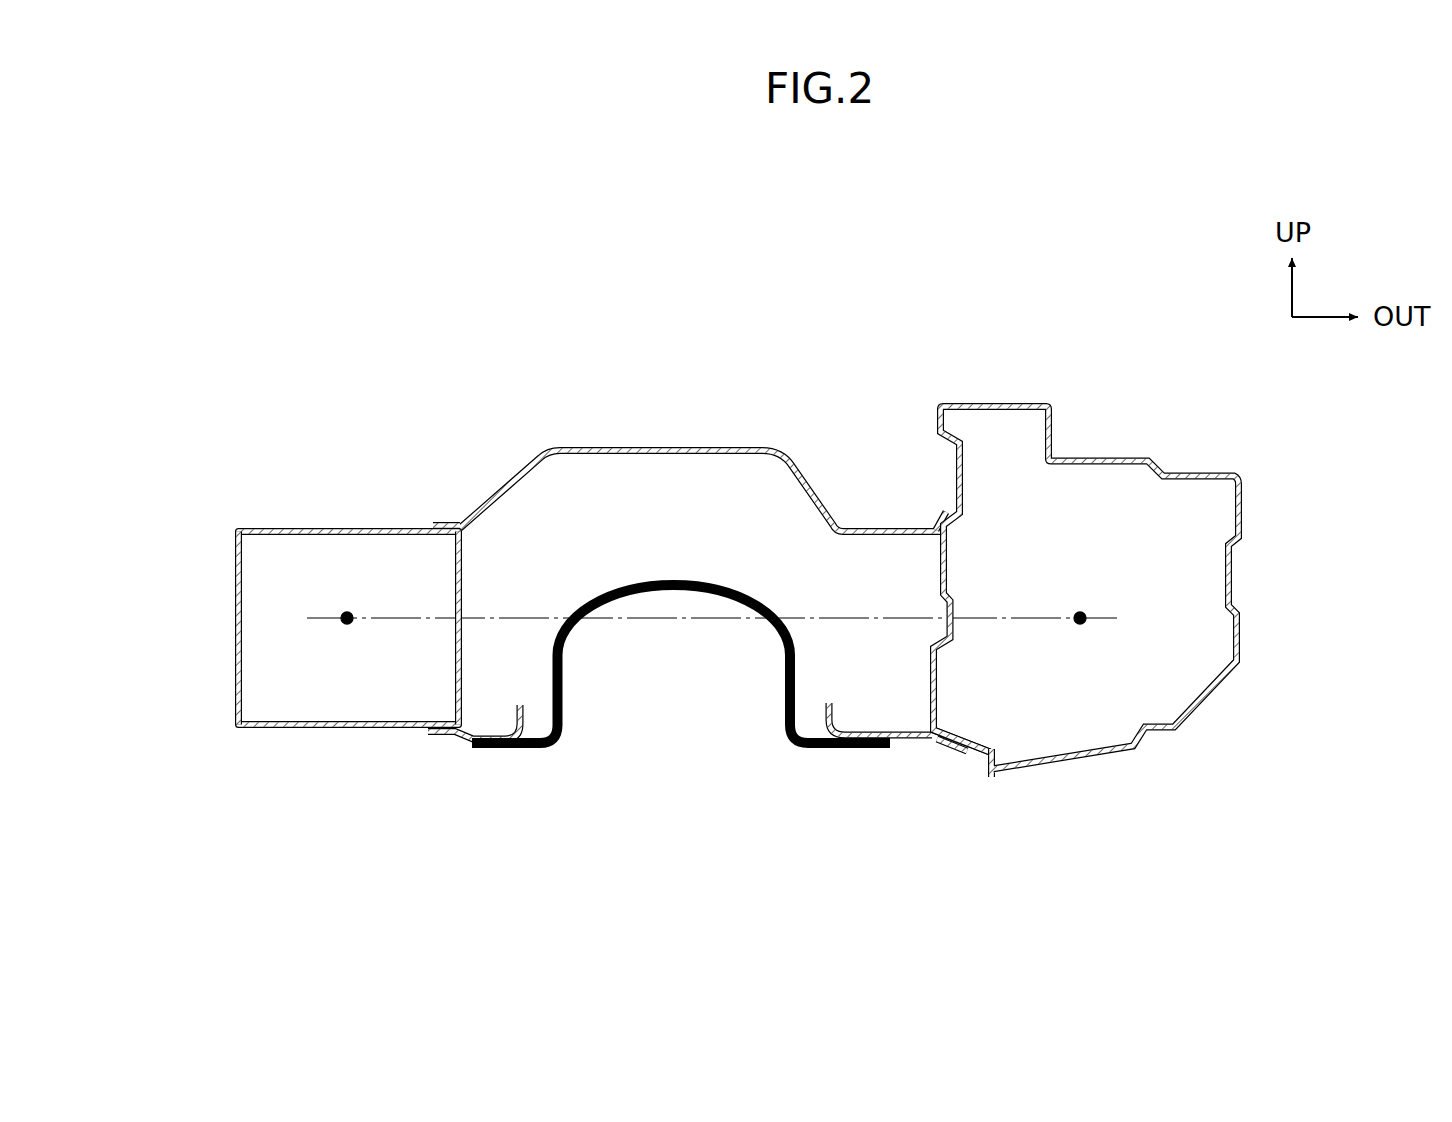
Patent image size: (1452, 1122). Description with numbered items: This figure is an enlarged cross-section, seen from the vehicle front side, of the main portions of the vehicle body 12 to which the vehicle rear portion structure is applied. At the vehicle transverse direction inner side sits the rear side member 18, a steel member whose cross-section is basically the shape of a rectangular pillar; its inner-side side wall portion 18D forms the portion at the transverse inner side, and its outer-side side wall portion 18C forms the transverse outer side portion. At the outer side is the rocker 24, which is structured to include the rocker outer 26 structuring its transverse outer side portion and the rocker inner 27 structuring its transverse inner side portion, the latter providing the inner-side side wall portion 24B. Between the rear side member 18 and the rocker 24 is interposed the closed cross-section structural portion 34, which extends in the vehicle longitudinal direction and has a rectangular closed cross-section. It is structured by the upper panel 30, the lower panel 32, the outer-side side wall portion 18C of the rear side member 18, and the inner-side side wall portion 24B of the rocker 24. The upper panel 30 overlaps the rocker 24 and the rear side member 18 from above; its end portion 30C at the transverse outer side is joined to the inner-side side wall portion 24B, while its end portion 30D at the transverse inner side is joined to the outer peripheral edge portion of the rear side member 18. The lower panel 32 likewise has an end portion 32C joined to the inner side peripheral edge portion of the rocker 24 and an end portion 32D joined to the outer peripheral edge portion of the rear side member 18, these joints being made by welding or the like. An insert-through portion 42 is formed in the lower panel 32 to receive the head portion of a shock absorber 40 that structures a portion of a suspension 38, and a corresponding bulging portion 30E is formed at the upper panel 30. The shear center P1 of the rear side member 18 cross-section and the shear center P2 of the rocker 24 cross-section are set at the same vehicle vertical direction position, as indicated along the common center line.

The vehicle body 12 is at (671, 551).
The rear side member 18 is at (373, 569).
The outer-side side wall portion 18C is at (462, 565).
The inner-side side wall portion 18D is at (236, 603).
The rocker 24 is at (1128, 537).
The inner-side side wall portion 24B is at (946, 560).
The rocker outer 26 is at (1243, 495).
The rocker inner 27 is at (965, 403).
The upper panel 30 is at (673, 437).
The end portion 30C is at (938, 512).
The end portion 30D is at (440, 522).
The bulging portion 30E is at (710, 447).
The lower panel 32 is at (671, 739).
The end portion 32C is at (960, 752).
The end portion 32D is at (430, 738).
The closed cross-section structural portion 34 is at (862, 405).
The suspension 38 is at (681, 704).
The shock absorber 40 is at (800, 748).
The insert-through portion 42 is at (524, 706).
The shear center P1 is at (349, 613).
The shear center P2 is at (1081, 612).